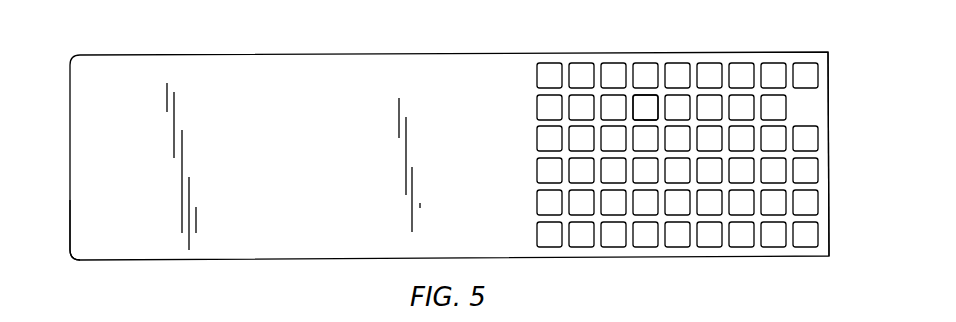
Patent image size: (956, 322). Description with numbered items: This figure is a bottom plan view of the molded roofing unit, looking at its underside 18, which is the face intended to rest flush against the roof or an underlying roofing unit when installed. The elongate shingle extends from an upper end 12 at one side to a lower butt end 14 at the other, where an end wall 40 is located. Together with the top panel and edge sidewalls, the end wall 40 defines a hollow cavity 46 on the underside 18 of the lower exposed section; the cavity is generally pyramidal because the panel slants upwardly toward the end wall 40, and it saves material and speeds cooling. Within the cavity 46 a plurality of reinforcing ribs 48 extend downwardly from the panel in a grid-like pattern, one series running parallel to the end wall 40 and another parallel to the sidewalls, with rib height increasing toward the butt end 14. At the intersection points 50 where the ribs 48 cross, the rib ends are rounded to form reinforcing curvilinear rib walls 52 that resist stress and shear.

The upper end 12 is at (68, 223).
The lower butt end 14 is at (833, 168).
The underside 18 is at (285, 185).
The end wall 40 is at (822, 103).
The hollow cavity 46 is at (572, 172).
The reinforcing ribs 48 is at (773, 88).
The intersection points 50 is at (627, 90).
The reinforcing curvilinear rib walls 52 is at (795, 222).